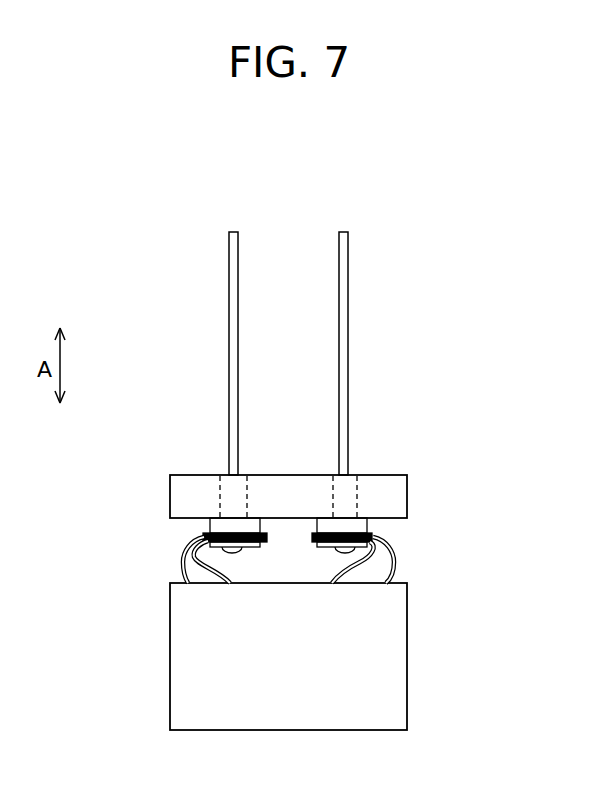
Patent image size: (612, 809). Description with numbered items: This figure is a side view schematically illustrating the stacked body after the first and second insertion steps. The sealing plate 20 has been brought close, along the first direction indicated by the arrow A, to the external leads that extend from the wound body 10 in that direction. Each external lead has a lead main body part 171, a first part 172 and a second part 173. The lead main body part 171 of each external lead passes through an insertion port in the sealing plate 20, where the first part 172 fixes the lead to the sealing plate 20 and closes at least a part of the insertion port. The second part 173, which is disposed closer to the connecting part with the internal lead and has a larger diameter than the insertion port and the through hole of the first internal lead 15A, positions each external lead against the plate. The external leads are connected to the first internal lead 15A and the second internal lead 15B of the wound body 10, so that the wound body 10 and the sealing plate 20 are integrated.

The wound body 10 is at (380, 679).
The sealing plate 20 is at (396, 498).
The lead main body part 171 is at (229, 290).
The first part 172 is at (224, 487).
The second part 173 is at (210, 527).
The first internal lead 15A is at (186, 568).
The second internal lead 15B is at (388, 568).